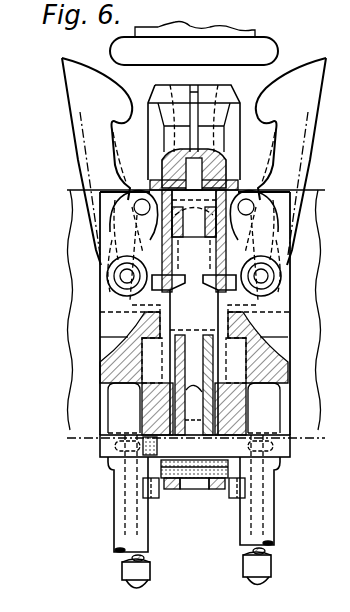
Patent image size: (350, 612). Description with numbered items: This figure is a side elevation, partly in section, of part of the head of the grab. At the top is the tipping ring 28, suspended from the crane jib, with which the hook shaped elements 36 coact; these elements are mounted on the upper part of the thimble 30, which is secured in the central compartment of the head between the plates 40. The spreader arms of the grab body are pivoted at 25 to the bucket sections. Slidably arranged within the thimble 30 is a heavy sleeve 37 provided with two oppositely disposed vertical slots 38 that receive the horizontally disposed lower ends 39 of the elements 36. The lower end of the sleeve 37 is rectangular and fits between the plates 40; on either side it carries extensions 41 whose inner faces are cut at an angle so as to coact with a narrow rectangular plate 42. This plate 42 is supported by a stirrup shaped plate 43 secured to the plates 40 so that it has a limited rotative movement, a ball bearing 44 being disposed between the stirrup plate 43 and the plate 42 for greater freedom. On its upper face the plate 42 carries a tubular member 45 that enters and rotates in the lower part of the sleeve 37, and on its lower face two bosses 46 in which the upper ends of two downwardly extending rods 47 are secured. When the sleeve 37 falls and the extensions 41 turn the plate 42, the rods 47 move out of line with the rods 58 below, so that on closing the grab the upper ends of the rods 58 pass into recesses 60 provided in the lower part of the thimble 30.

The pivot 25 is at (195, 18).
The tipping ring 28 is at (253, 55).
The hook shaped elements 36 is at (194, 161).
The thimble 30 is at (133, 190).
The sleeve 37 is at (194, 231).
The slots 38 is at (100, 313).
The lower ends 39 is at (175, 285).
The plates 40 is at (100, 348).
The extensions 41 is at (149, 492).
The narrow rectangular plate 42 is at (112, 451).
The stirrup shaped plate 43 is at (169, 482).
The ball bearing 44 is at (193, 493).
The tubular member 45 is at (144, 384).
The bosses 46 is at (123, 474).
The rods 47 is at (141, 534).
The rods 58 is at (124, 425).
The recesses 60 is at (140, 368).